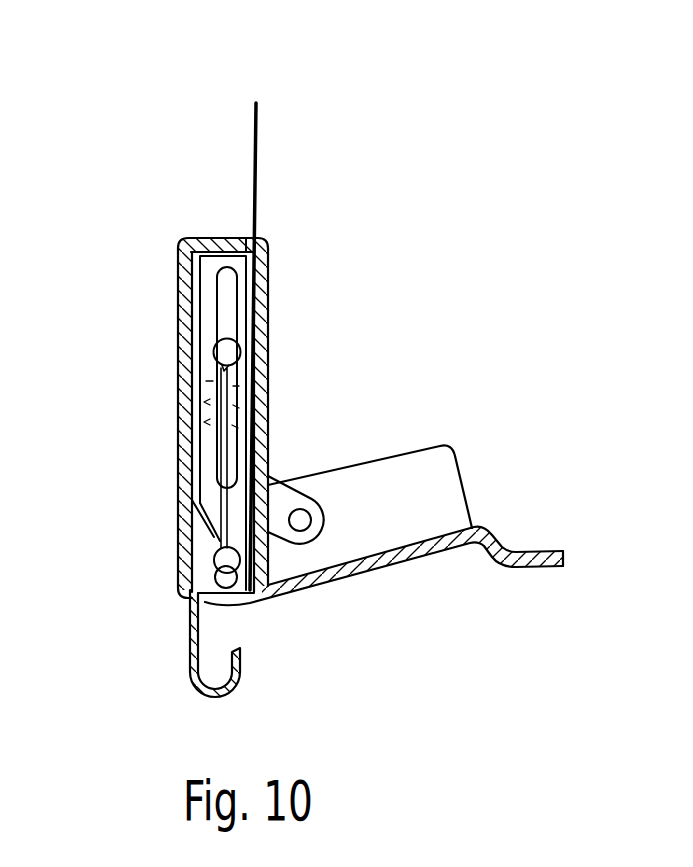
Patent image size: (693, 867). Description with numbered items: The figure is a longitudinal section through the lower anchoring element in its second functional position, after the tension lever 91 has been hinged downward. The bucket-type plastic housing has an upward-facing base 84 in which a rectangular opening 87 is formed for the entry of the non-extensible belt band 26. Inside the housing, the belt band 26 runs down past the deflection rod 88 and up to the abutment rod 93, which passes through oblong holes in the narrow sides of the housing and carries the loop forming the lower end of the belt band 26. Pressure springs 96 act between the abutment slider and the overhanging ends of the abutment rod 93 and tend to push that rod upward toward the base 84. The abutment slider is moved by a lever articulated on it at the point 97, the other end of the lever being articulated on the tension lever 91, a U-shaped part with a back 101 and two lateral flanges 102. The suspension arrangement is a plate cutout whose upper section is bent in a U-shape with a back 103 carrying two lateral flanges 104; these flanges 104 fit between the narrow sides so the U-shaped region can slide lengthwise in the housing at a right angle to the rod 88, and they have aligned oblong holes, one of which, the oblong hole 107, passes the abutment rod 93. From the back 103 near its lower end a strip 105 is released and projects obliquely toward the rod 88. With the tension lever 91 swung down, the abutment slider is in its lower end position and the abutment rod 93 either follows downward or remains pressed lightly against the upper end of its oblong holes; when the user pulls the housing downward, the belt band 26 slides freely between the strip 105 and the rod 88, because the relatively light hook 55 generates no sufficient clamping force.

The non-extensible belt band 26 is at (258, 126).
The hook 55 is at (238, 675).
The base 84 is at (203, 242).
The rectangular opening 87 is at (255, 232).
The deflection rod 88 is at (215, 562).
The tension lever 91 is at (572, 535).
The abutment rod 93 is at (268, 347).
The pressure springs 96 is at (228, 392).
The articulation point of lever on abutment slider 97 is at (267, 455).
The back 101 is at (413, 563).
The lateral flanges 102 is at (413, 480).
The back 103 is at (197, 441).
The lateral flanges 104 is at (205, 257).
The strip 105 is at (197, 516).
The oblong hole 107 is at (230, 298).